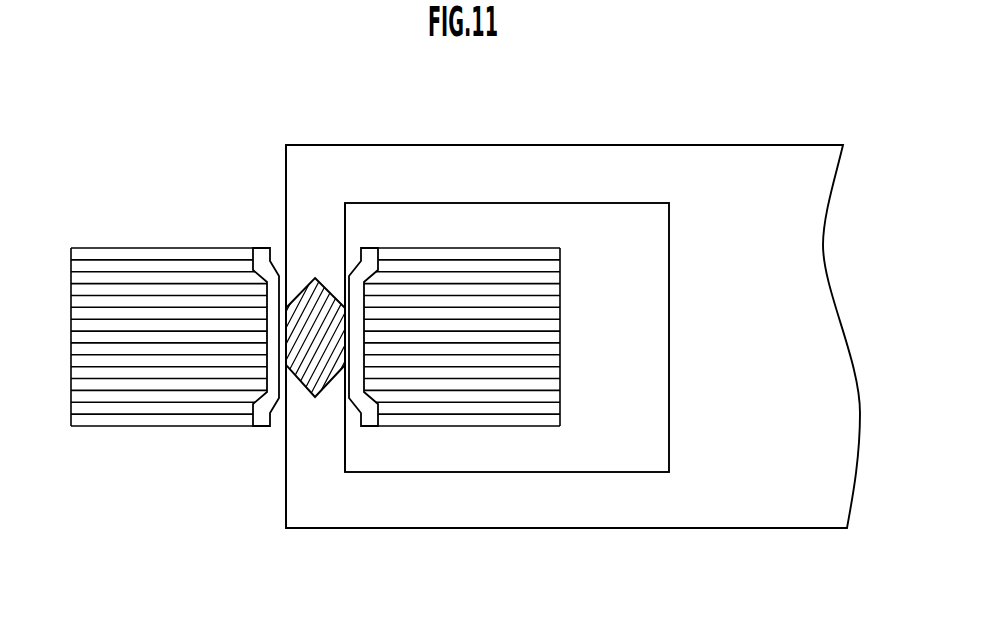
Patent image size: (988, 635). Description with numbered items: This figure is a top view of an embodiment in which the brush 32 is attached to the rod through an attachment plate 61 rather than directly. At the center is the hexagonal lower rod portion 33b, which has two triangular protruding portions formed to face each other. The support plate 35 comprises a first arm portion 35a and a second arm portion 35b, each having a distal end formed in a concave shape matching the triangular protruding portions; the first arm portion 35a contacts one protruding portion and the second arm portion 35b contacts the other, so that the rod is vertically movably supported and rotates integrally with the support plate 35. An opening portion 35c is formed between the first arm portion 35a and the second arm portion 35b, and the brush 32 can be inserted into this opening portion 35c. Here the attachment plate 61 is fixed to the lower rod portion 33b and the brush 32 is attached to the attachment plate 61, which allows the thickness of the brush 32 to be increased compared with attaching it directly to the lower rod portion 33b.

The brush 32 is at (99, 266).
The lower rod portion 33b is at (308, 280).
The support plate 35 is at (560, 143).
The first arm portion 35a is at (320, 407).
The second arm portion 35b is at (320, 265).
The opening portion 35c is at (607, 452).
The attachment plate 61 is at (260, 426).